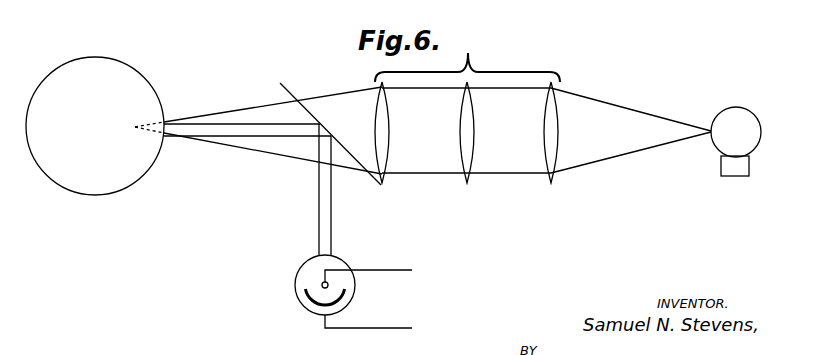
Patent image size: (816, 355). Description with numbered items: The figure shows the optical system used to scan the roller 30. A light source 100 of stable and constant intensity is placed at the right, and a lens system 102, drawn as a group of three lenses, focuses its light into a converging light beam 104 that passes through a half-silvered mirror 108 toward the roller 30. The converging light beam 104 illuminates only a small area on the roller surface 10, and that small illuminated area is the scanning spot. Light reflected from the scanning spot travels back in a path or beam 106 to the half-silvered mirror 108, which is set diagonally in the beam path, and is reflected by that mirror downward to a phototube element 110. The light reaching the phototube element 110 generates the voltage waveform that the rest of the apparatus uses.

The roller surface 10 is at (161, 100).
The roller 30 is at (122, 117).
The light source 100 is at (733, 120).
The lens system 102 is at (472, 53).
The converging light beam 104 is at (238, 110).
The reflected light beam 106 is at (255, 129).
The half-silvered mirror 108 is at (380, 186).
The phototube element 110 is at (295, 292).